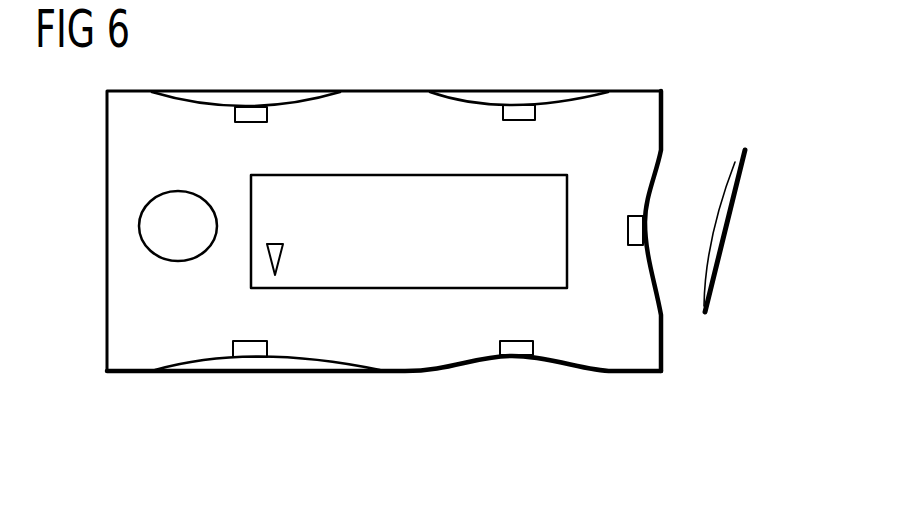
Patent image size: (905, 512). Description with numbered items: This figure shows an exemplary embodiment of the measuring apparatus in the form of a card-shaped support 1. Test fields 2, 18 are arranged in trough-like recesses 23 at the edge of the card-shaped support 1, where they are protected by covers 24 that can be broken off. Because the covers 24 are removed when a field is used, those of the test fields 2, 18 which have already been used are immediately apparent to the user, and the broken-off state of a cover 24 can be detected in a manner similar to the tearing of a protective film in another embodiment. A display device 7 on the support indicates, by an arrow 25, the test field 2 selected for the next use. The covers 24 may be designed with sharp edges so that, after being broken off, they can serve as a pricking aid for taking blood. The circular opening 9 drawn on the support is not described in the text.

The card-shaped support 1 is at (130, 281).
The test field 2 is at (236, 349).
The display device 7 is at (422, 272).
The opening 9 is at (176, 200).
The test field 18 is at (503, 112).
The trough-like recess 23 is at (670, 196).
The cover 24 is at (720, 228).
The arrow 25 is at (283, 255).